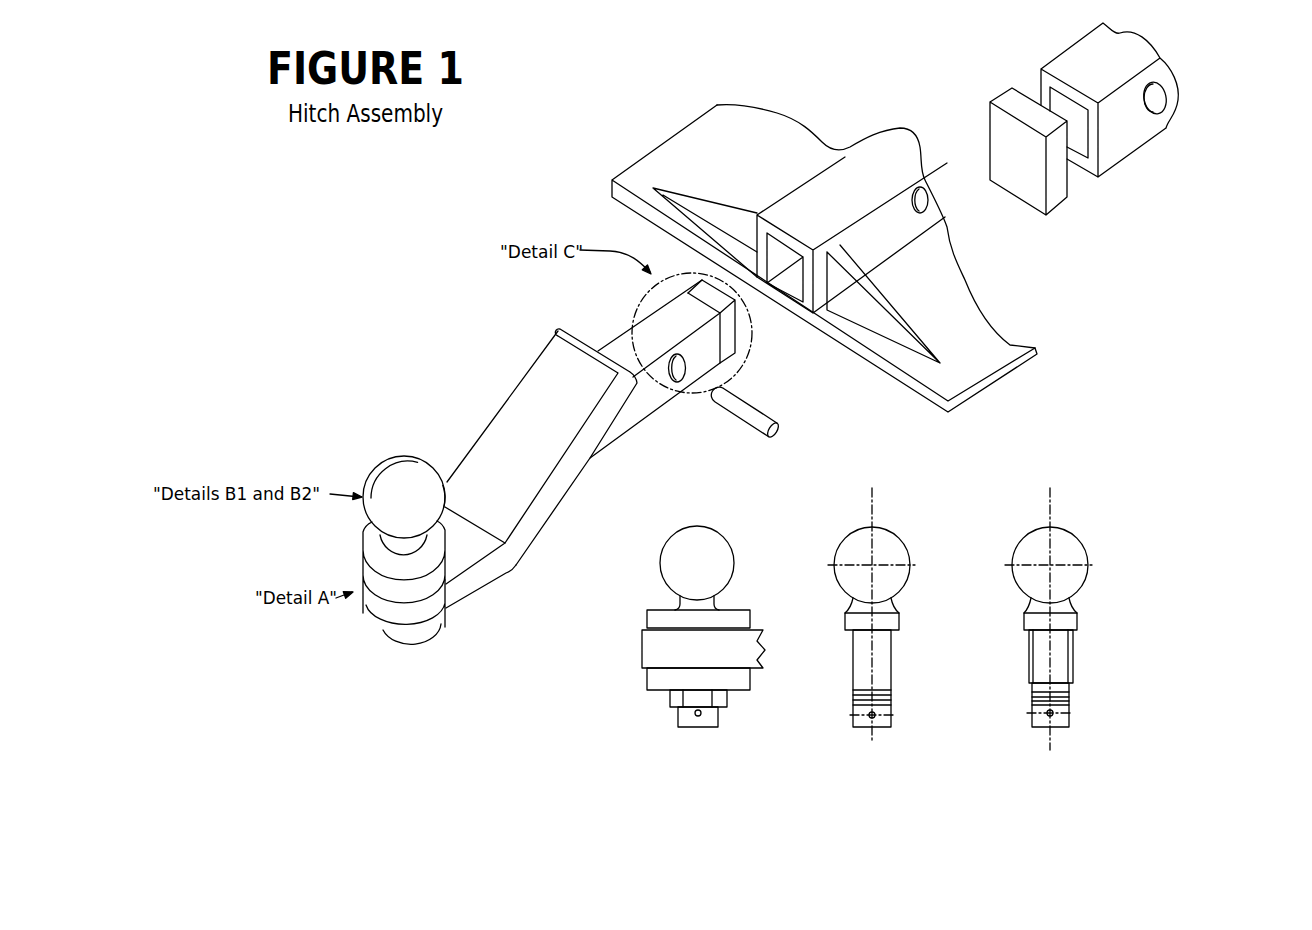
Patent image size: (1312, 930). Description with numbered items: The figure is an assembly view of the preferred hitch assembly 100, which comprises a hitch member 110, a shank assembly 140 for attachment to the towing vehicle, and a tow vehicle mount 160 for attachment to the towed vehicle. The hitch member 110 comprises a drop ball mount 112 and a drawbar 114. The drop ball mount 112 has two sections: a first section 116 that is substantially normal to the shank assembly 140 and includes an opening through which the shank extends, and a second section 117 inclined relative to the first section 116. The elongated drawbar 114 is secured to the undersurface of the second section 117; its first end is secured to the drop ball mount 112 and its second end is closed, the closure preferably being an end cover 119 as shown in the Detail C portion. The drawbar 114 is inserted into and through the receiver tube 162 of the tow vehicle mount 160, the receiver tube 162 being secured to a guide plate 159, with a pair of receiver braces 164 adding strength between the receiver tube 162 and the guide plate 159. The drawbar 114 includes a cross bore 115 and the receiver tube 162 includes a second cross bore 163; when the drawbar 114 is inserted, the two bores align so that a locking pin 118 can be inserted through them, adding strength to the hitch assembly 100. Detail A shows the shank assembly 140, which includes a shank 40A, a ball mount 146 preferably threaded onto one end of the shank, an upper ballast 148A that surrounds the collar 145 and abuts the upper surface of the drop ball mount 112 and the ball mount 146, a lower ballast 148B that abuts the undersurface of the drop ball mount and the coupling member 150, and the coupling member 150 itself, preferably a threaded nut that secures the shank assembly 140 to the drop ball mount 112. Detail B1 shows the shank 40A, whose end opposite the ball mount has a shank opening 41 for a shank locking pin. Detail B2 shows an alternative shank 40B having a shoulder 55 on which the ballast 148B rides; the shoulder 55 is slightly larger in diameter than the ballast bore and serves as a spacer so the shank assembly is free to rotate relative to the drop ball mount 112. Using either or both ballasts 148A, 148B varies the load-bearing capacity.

The hitch assembly 100 is at (541, 207).
The hitch member 110 is at (505, 375).
The drop ball mount 112 is at (495, 432).
The drawbar 114 is at (610, 437).
The cross bore 115 is at (670, 368).
The first section 116 is at (485, 545).
The second section 117 is at (552, 352).
The locking pin 118 is at (796, 428).
The end cover 119 is at (693, 291).
The shank assembly 140 is at (357, 653).
The collar 145 is at (693, 617).
The ball mount 146 is at (417, 473).
The upper ballast 148A is at (382, 577).
The lower ballast 148B is at (377, 620).
The coupling member 150 is at (675, 690).
The shank opening 41 is at (697, 713).
The shank 40A is at (880, 655).
The shank 40B is at (1060, 655).
The shoulder 55 is at (1075, 673).
The guide plate 159 is at (748, 132).
The tow vehicle mount 160 is at (988, 409).
The receiver tube 162 is at (790, 288).
The second cross bore 163 is at (923, 203).
The receiver brace 164 is at (673, 187).